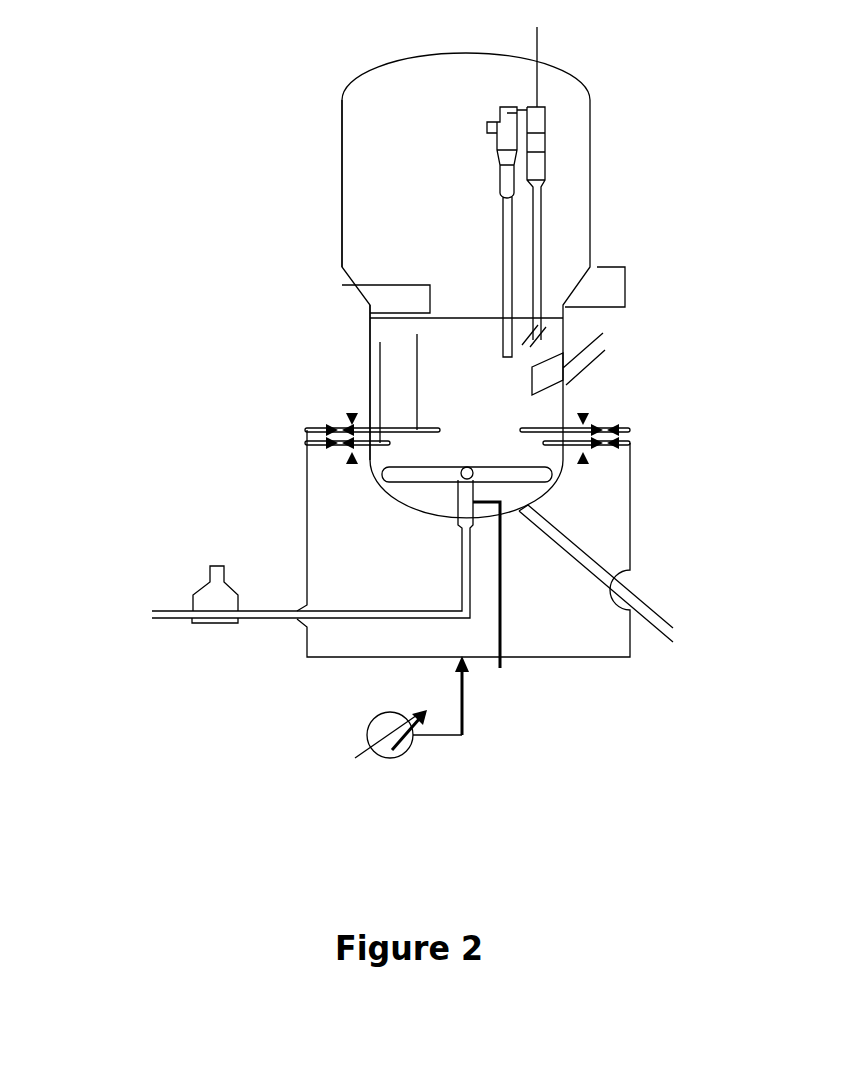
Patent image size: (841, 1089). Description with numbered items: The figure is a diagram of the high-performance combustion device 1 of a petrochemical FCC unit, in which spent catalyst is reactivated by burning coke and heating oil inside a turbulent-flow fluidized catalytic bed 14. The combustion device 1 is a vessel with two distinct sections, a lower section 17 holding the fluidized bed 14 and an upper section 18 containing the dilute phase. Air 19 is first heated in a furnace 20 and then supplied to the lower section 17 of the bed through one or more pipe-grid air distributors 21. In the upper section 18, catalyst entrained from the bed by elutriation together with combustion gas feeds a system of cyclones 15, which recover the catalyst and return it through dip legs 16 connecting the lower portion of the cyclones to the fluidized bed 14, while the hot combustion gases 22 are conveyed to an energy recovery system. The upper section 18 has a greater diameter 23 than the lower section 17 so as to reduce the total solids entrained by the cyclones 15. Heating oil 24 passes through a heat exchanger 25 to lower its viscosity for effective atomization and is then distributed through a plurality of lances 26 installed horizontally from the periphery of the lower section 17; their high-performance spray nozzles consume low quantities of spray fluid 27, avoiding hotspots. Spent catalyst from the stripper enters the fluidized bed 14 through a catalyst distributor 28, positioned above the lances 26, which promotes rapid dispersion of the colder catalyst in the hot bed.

The combustion device 1 is at (397, 57).
The fluidized catalytic bed 14 is at (430, 285).
The cyclones 15 is at (537, 167).
The dip legs 16 is at (543, 225).
The lower section 17 is at (370, 375).
The upper section 18 is at (342, 171).
The air 19 is at (131, 620).
The furnace 20 is at (217, 566).
The pipe-grid air distributor 21 is at (500, 610).
The combustion gases 22 is at (537, 27).
The greater diameter 23 is at (625, 287).
The heating oil 24 is at (353, 742).
The heat exchanger 25 is at (397, 771).
The lances 26 is at (417, 334).
The spray fluid 27 is at (286, 442).
The catalyst distributor 28 is at (550, 381).